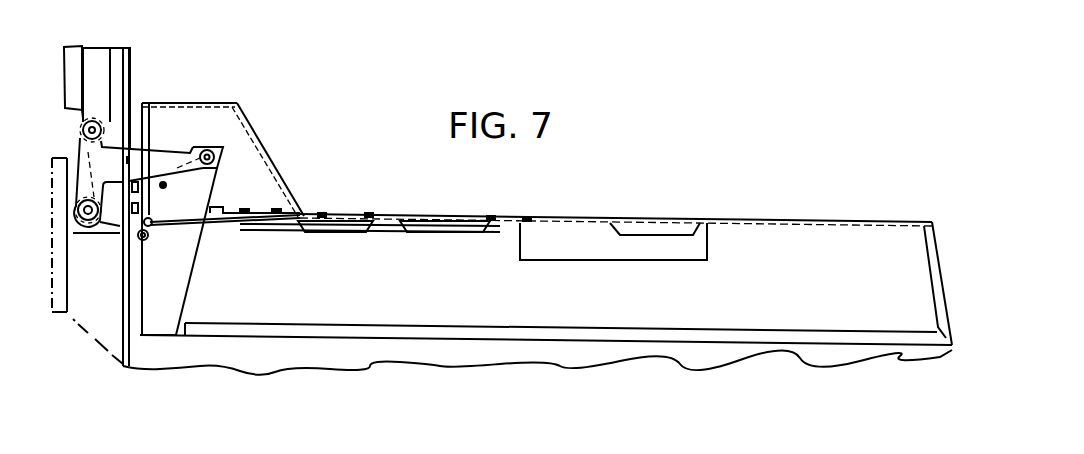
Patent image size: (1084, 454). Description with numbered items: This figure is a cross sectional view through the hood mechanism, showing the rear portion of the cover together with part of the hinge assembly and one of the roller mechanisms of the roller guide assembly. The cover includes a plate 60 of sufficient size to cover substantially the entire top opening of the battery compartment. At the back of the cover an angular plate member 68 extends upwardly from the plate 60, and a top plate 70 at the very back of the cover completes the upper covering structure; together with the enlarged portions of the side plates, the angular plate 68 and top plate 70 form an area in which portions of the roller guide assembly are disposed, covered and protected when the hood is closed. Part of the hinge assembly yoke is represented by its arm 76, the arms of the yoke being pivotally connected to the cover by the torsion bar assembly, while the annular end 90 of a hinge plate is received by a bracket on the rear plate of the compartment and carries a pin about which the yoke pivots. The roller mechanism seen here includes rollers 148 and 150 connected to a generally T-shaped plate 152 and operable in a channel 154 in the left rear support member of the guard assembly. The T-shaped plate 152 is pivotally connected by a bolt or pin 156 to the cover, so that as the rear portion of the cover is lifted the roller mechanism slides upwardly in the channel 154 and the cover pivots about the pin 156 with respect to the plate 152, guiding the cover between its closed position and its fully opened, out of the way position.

The plate 60 is at (652, 220).
The angular plate member 68 is at (263, 150).
The top plate 70 is at (189, 103).
The arm 76 is at (358, 10).
The annular end 90 is at (140, 262).
The roller 148 is at (84, 128).
The roller 150 is at (87, 216).
The T-shaped plate 152 is at (164, 152).
The channel 154 is at (98, 55).
The bolt or pin 156 is at (216, 166).